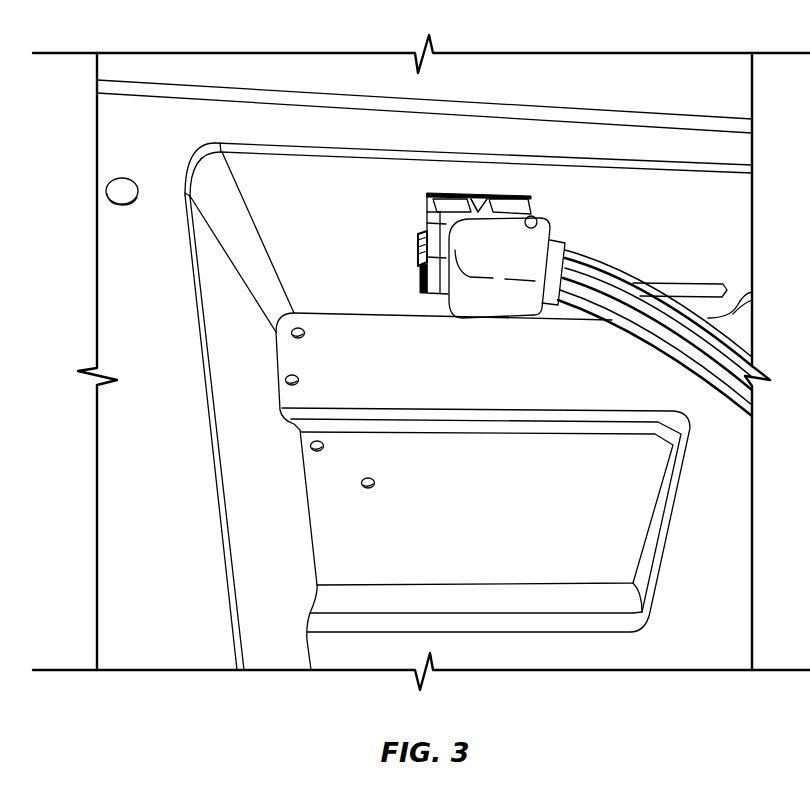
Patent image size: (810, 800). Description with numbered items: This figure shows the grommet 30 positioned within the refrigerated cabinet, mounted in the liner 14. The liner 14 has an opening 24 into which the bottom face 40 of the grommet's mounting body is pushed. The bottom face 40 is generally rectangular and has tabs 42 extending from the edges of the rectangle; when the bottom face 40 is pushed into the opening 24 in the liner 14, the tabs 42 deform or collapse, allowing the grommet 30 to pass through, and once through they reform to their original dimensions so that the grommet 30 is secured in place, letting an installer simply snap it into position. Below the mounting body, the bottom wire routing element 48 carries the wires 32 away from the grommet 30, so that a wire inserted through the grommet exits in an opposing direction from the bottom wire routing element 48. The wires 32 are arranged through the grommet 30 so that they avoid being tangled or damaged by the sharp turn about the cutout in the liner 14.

The liner 14 is at (638, 190).
The opening 24 is at (452, 193).
The grommet 30 is at (470, 195).
The wires 32 is at (665, 349).
The bottom face 40 is at (445, 154).
The tabs 42 is at (480, 200).
The bottom wire routing element 48 is at (494, 313).